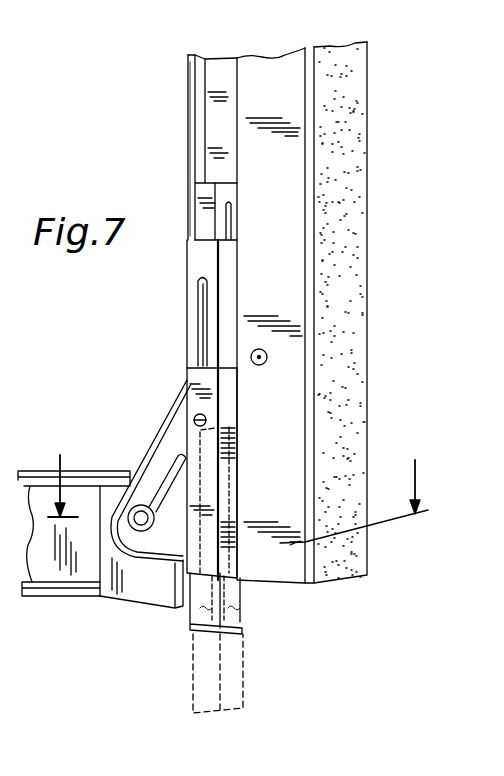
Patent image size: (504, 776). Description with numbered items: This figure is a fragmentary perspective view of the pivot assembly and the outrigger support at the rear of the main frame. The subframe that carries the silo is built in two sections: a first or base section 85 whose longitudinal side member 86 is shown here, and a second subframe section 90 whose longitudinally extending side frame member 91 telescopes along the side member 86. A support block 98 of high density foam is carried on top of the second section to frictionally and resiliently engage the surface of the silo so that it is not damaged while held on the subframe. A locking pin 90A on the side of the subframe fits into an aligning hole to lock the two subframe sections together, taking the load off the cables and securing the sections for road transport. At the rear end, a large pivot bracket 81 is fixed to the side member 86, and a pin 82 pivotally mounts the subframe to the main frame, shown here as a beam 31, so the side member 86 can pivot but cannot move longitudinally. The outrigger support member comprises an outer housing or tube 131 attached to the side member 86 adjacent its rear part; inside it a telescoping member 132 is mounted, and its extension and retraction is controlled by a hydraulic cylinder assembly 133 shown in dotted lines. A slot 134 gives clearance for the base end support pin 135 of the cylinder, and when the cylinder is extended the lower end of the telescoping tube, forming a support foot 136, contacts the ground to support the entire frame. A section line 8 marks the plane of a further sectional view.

The section line 8- 8 is at (238, 486).
The beam 31 is at (77, 598).
The pivot bracket 81 is at (160, 545).
The pin 82 is at (135, 505).
The first subframe section 85 is at (189, 136).
The longitudinal side member 86 is at (215, 97).
The second subframe section 90 is at (286, 590).
The locking pin 90A is at (267, 357).
The side frame member 91 is at (263, 70).
The support block 98 is at (348, 334).
The outer housing or tube 131 is at (190, 391).
The telescoping member 132 is at (192, 253).
The hydraulic cylinder assembly 133 is at (229, 487).
The slot 134 is at (204, 298).
The base end support pin 135 is at (207, 418).
The support foot 136 is at (232, 631).